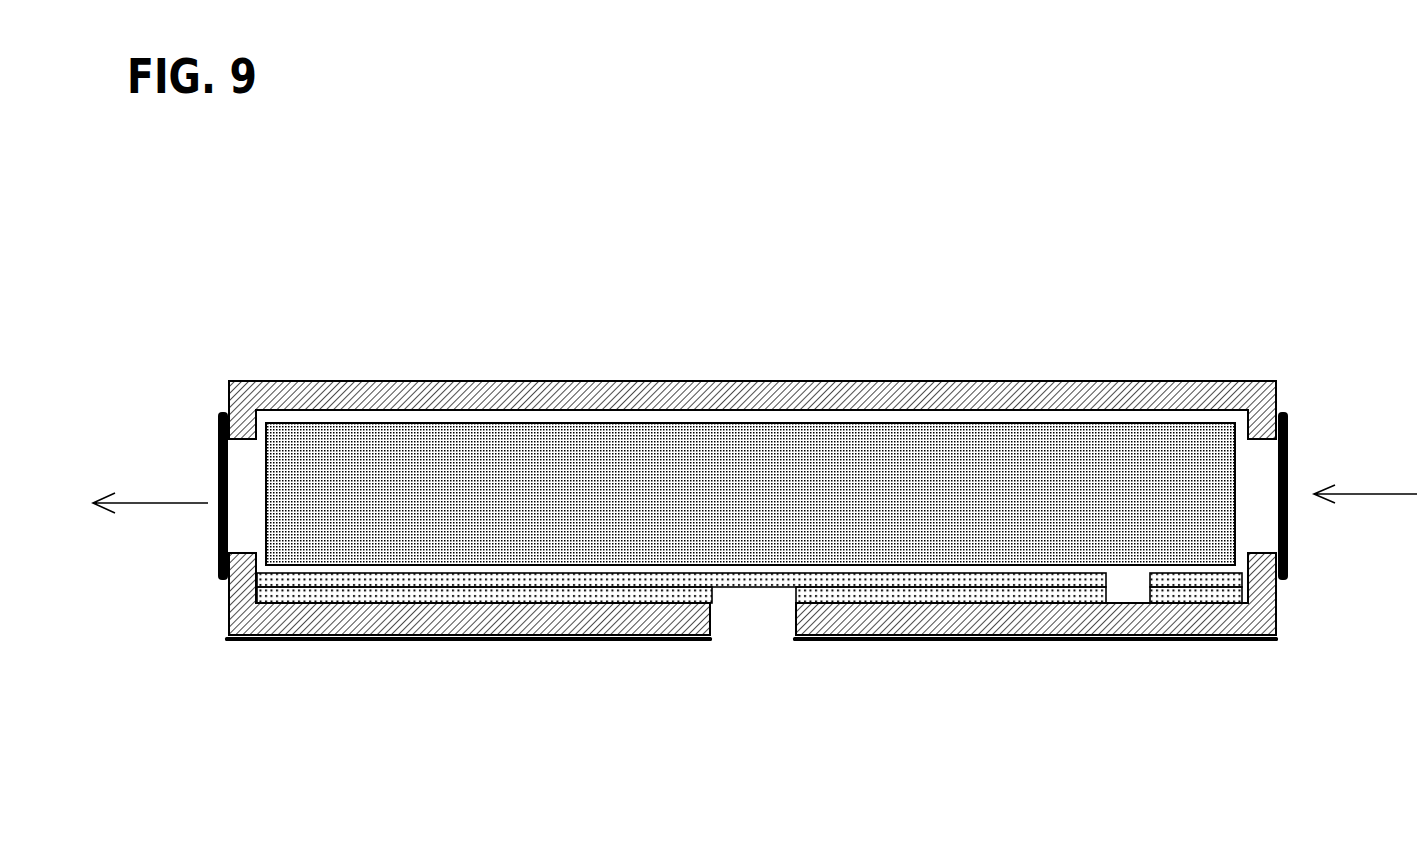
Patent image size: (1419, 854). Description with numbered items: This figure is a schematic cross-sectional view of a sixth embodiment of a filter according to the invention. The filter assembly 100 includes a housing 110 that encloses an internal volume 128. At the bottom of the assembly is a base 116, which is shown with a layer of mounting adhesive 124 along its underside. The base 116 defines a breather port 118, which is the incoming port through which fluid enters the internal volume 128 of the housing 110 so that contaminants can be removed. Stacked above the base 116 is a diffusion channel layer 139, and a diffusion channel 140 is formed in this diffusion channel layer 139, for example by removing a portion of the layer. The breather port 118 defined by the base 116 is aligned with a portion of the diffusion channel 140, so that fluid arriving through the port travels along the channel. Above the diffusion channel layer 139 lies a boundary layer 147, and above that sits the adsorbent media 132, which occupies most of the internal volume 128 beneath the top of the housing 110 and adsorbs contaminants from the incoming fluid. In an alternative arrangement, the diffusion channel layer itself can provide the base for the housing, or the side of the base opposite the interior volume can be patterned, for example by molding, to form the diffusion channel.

The filter assembly 100 is at (576, 288).
The housing 110 is at (982, 365).
The base 116 is at (582, 618).
The breather port 118 is at (777, 695).
The mounting adhesive 124 is at (908, 641).
The internal volume 128 is at (356, 420).
The adsorbent media 132 is at (1036, 468).
The diffusion channel layer 139 is at (1243, 598).
The diffusion channel 140 is at (1130, 590).
The boundary layer 147 is at (1242, 582).